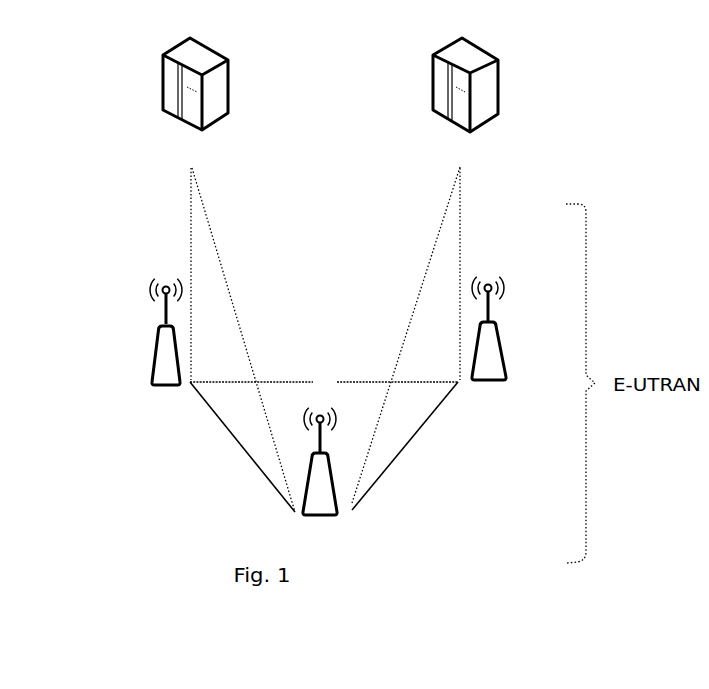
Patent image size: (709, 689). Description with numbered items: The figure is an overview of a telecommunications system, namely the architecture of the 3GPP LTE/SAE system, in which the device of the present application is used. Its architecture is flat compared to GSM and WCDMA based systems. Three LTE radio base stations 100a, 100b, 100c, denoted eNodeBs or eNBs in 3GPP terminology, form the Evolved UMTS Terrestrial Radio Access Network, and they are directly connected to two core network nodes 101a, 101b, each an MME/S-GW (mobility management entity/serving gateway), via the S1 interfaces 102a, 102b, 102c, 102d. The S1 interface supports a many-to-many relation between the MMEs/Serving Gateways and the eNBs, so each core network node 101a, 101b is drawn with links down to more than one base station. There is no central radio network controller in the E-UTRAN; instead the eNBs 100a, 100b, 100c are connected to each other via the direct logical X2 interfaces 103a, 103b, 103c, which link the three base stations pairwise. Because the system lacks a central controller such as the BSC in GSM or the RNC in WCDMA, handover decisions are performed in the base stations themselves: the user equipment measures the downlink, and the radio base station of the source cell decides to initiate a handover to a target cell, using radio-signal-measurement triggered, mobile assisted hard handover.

The LTE radio base station 100a is at (163, 348).
The LTE radio base station 100b is at (322, 508).
The LTE radio base station 100c is at (490, 342).
The core network node MME/S-GW 101a is at (173, 101).
The core network node MME/S-GW 101b is at (484, 101).
The S1 interface 102a is at (187, 233).
The S1 interface 102b is at (205, 210).
The S1 interface 102c is at (438, 228).
The S1 interface 102d is at (462, 228).
The X2 interface 103a is at (207, 418).
The X2 interface 103b is at (283, 380).
The X2 interface 103c is at (425, 428).